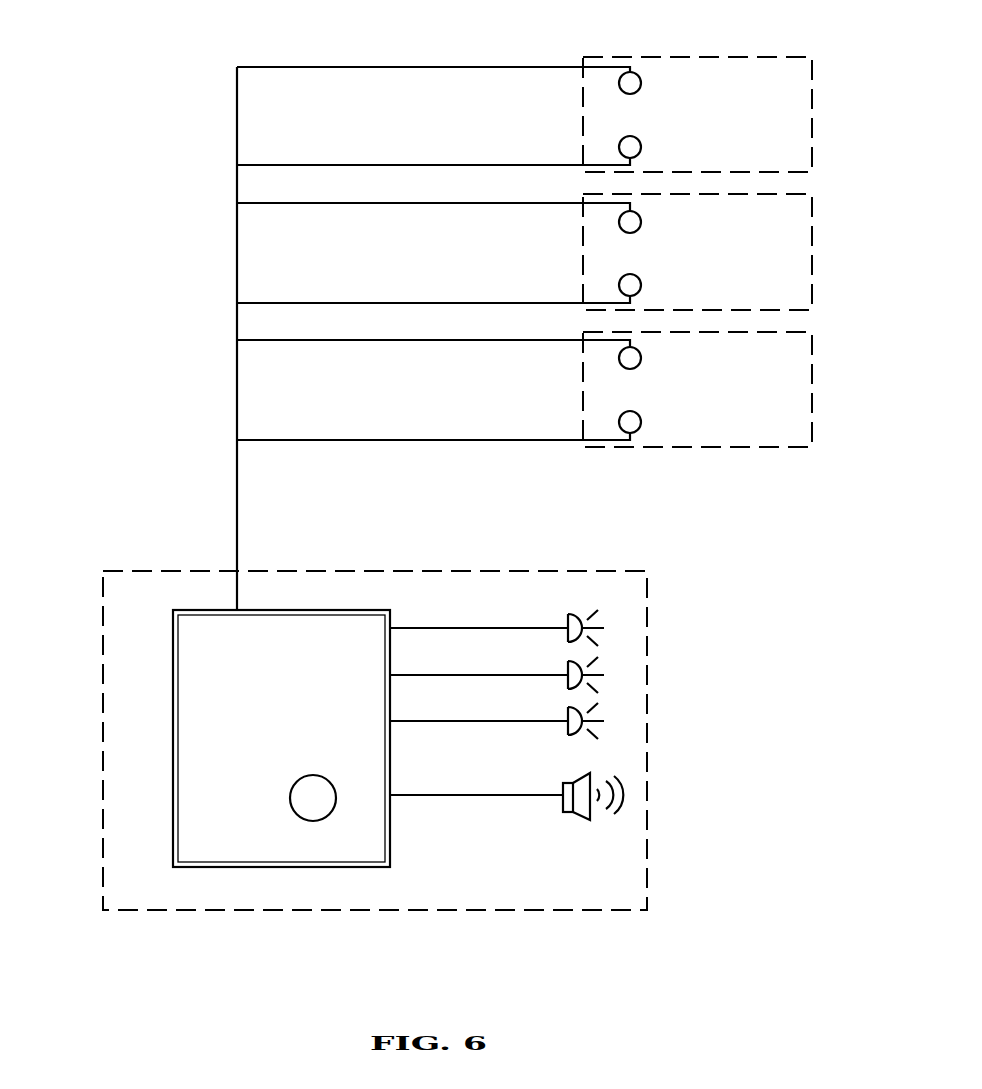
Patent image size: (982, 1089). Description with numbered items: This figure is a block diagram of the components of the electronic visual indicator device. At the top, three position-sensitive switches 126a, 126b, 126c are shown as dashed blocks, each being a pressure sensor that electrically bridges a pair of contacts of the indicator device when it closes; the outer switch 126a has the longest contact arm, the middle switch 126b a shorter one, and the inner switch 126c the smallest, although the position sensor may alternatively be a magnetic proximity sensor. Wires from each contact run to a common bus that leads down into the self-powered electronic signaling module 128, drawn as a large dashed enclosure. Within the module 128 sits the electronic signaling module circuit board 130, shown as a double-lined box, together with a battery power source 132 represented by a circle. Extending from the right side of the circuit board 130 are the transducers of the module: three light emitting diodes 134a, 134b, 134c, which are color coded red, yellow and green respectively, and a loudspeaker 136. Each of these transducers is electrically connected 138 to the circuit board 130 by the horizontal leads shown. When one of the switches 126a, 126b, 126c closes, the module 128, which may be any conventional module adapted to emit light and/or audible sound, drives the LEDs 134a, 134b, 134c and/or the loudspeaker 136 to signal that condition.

The outer position-sensitive switch 126a is at (813, 83).
The middle position-sensitive switch 126b is at (813, 222).
The inner position-sensitive switch 126c is at (813, 358).
The self-powered electronic signaling module 128 is at (103, 865).
The electronic signaling module circuit board 130 is at (172, 690).
The battery power source 132 is at (311, 821).
The red light emitting diode 134a is at (610, 628).
The yellow light emitting diode 134b is at (610, 675).
The green light emitting diode 134c is at (610, 721).
The loudspeaker 136 is at (626, 795).
The electrical connection 138 is at (548, 795).